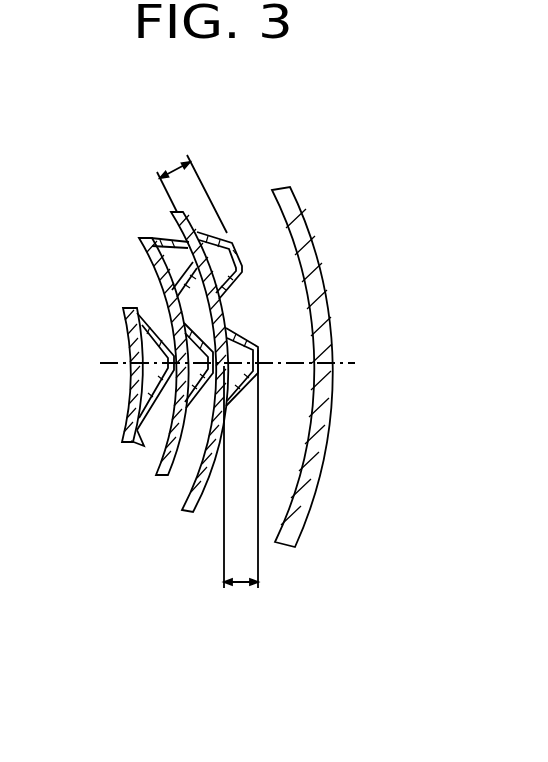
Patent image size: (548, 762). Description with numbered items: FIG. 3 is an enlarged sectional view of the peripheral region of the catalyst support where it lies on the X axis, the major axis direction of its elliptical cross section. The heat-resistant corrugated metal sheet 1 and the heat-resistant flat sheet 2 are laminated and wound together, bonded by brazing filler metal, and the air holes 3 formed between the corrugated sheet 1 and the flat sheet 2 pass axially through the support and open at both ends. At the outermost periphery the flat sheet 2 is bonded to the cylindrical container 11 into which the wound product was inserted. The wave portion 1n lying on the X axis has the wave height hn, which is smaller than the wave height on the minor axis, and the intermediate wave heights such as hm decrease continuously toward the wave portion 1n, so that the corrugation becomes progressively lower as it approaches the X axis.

The heat-resistant corrugated metal sheet 1 is at (232, 248).
The wave portion on the X axis 1n is at (249, 333).
The heat-resistant flat sheet 2 is at (162, 362).
The air holes 3 is at (140, 381).
The cylindrical container 11 is at (330, 448).
The X axis X is at (350, 363).
The wave height between wave portions hm is at (180, 170).
The wave height of the wave portion on the X axis hn is at (242, 584).